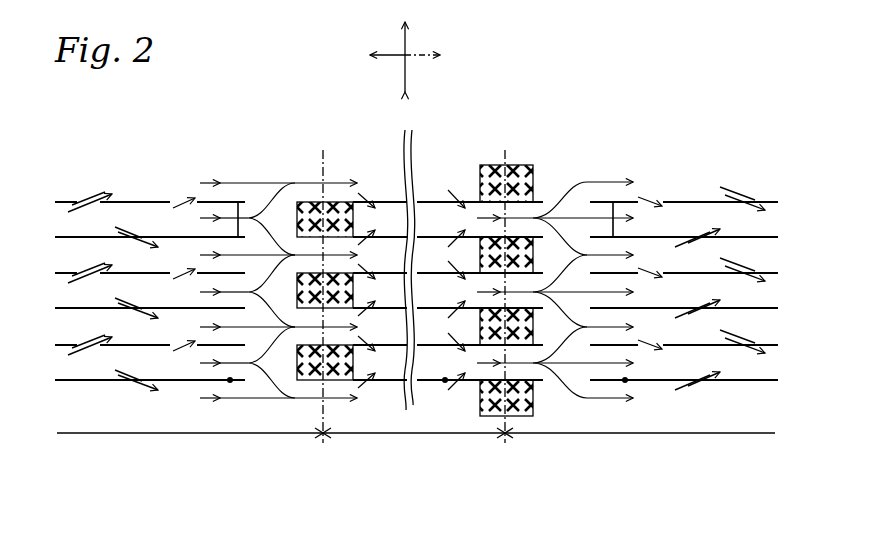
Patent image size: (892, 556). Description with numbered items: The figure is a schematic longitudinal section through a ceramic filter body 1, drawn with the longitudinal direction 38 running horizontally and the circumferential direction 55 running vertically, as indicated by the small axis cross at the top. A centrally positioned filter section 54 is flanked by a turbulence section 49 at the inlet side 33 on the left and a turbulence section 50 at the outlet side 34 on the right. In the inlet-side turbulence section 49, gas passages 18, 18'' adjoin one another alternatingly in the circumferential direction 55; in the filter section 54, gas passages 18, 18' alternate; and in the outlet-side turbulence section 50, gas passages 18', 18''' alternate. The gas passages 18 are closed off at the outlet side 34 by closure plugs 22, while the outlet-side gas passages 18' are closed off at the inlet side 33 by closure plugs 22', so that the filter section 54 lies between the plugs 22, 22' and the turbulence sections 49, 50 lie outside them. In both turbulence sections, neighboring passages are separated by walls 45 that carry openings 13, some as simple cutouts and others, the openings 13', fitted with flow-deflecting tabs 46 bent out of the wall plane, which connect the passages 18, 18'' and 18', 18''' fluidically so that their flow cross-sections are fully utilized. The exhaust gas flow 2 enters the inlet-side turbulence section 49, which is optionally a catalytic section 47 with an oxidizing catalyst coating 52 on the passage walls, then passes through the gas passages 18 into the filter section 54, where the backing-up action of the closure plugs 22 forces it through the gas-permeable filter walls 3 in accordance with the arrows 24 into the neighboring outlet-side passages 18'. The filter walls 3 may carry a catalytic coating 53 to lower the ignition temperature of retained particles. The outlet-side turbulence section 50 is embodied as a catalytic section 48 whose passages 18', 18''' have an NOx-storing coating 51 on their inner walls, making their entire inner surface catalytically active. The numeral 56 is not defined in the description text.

The filter body 1 is at (553, 110).
The exhaust gas flow 2 is at (288, 182).
The filter walls 3 is at (401, 200).
The openings 13 is at (412, 244).
The openings with flow-deflecting tabs 13' is at (417, 154).
The gas passages 18 is at (379, 293).
The gas passages at the outlet side 18' is at (520, 291).
The gas passages of the inlet-side turbulence section 18'' is at (213, 290).
The gas passages of the outlet-side turbulence section 18''' is at (627, 290).
The closure plugs 22 is at (507, 275).
The closure plugs 22' is at (329, 290).
The arrows 24 is at (455, 229).
The inlet side 33 is at (61, 124).
The outlet side 34 is at (759, 102).
The longitudinal direction 38 is at (393, 55).
The walls 45 is at (237, 233).
The flow-deflecting tabs 46 is at (93, 190).
The catalytic section 47 is at (165, 401).
The catalytic section at the outlet side 48 is at (679, 406).
The turbulence section at the inlet side 49 is at (150, 435).
The turbulence section at the outlet side 50 is at (647, 435).
The NOx-storing coating 51 is at (625, 383).
The oxidizing catalyst coating 52 is at (230, 383).
The catalytic coating 53 is at (445, 383).
The filter section 54 is at (393, 435).
The circumferential direction 55 is at (408, 48).
The deflecting surface 56 is at (123, 375).